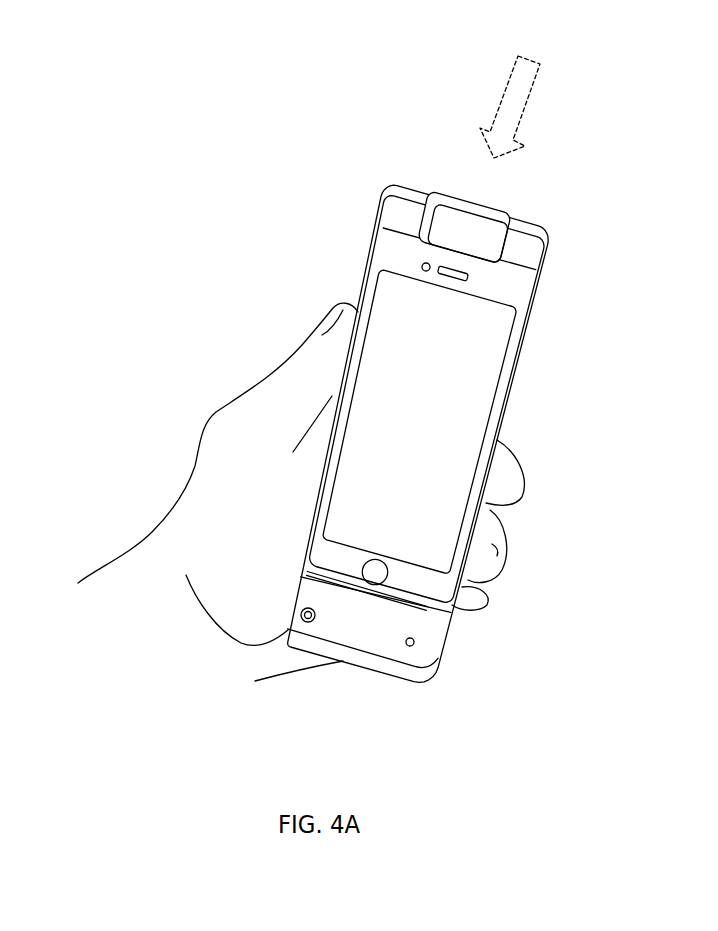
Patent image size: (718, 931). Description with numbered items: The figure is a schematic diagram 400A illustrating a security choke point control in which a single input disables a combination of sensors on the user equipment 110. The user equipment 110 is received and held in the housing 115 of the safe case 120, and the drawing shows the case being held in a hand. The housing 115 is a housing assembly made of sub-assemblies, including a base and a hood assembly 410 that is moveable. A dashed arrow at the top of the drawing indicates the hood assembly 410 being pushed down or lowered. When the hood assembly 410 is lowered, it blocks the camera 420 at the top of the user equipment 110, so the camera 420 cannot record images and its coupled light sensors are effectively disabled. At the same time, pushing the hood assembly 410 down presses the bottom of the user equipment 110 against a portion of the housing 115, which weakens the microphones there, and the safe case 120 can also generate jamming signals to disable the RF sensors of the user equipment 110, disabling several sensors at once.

The schematic diagram 400A is at (414, 401).
The user equipment 110 is at (451, 389).
The housing 115 is at (433, 642).
The safe case 120 is at (456, 432).
The hood assembly 410 is at (465, 205).
The camera 420 is at (422, 267).